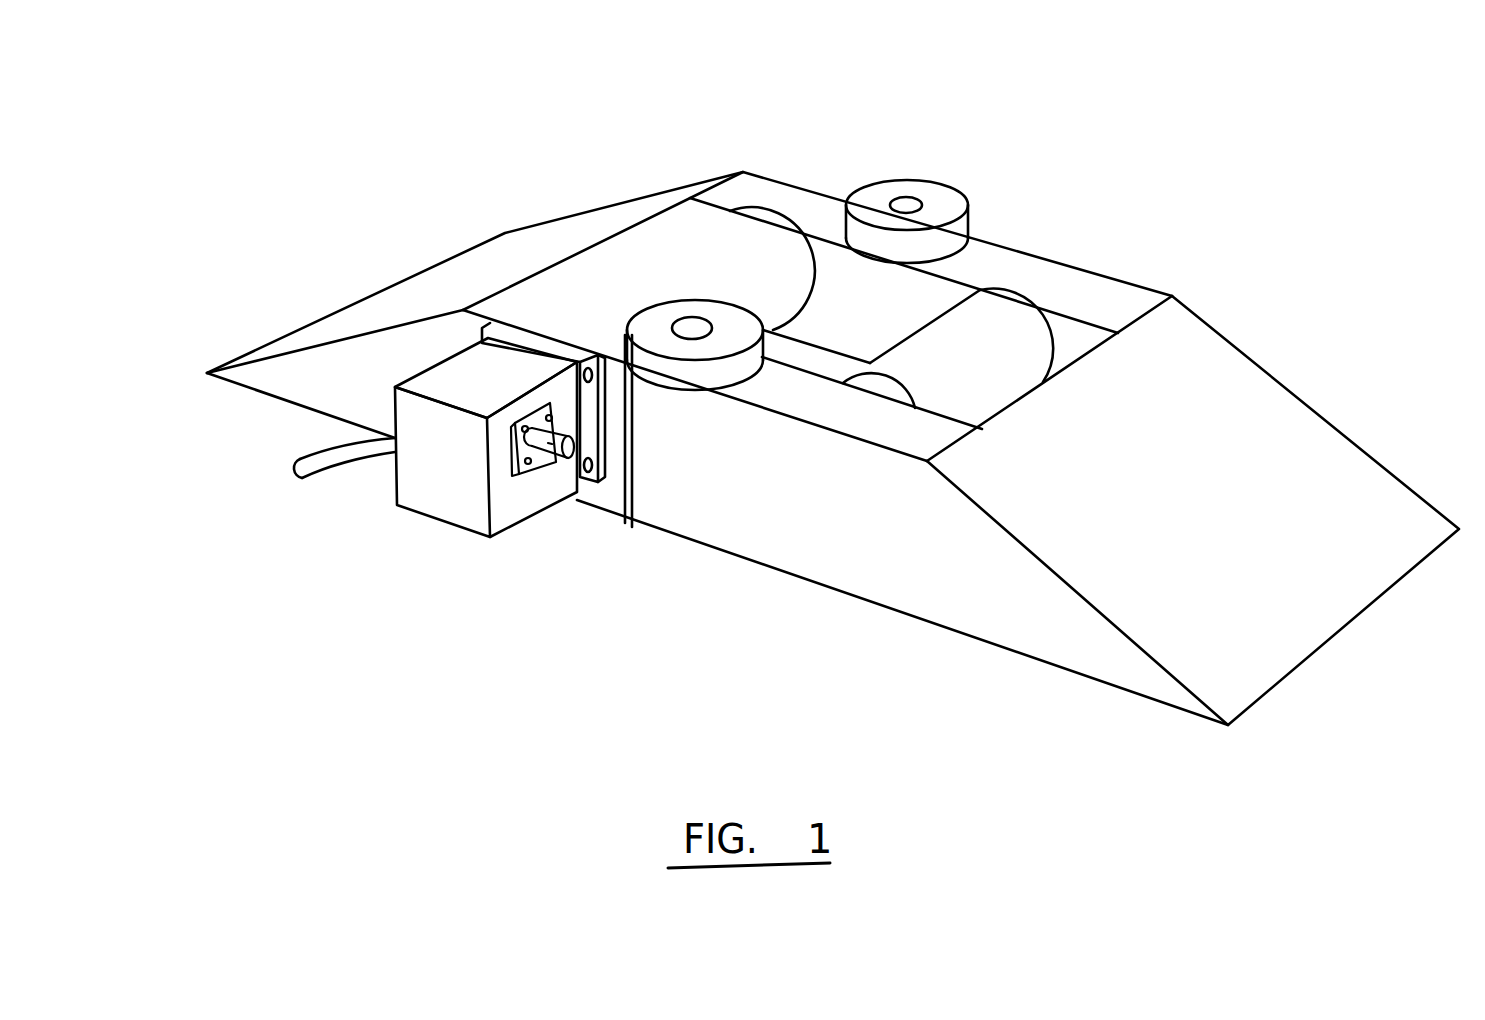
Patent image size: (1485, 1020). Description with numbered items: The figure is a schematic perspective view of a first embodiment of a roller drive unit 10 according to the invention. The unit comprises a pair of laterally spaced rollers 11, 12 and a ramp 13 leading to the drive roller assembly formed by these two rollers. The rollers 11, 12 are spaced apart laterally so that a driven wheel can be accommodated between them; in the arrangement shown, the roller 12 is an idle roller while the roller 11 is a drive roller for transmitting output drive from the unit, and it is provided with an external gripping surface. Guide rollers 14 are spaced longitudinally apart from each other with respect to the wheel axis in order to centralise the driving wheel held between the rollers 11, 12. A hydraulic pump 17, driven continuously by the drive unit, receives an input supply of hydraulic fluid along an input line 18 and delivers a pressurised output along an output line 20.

The roller drive unit 10 is at (1034, 234).
The drive roller 11 is at (687, 268).
The idle roller 12 is at (1007, 338).
The ramp 13 is at (1264, 428).
The guide rollers 14 is at (897, 192).
The hydraulic pump 17 is at (440, 478).
The input line 18 is at (553, 448).
The output line 20 is at (322, 455).